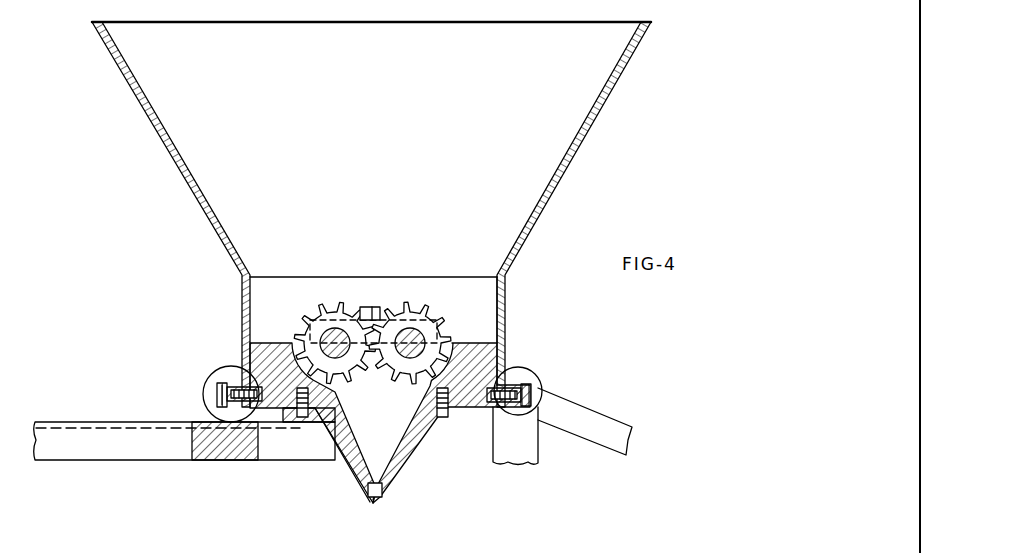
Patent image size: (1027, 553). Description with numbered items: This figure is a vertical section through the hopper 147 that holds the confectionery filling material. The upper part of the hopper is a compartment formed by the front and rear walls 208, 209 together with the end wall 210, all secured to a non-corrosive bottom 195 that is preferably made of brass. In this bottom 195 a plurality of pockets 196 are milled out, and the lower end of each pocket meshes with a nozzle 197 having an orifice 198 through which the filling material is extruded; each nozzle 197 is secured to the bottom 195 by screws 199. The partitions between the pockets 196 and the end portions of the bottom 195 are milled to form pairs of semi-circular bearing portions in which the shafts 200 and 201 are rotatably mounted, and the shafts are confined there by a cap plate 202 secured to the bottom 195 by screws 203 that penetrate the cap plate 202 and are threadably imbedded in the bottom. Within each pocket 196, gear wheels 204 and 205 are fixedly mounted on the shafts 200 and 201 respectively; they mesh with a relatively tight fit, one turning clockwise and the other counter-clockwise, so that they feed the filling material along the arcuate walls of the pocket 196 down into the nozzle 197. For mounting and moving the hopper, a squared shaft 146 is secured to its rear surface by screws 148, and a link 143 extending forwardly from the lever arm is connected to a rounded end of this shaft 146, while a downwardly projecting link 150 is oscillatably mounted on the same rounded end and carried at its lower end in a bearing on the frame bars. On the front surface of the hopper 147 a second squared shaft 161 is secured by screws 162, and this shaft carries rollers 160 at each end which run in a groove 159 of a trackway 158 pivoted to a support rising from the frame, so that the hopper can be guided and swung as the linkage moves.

The link 143 is at (622, 424).
The squared shaft 146 is at (516, 384).
The hopper 147 is at (508, 322).
The screws 148 is at (527, 395).
The downwardly projecting links 150 is at (538, 452).
The trackway 158 is at (86, 421).
The groove 159 is at (146, 427).
The rollers 160 is at (204, 396).
The squared shaft 161 is at (222, 383).
The screws 162 is at (215, 389).
The bottom 195 is at (478, 410).
The pockets 196 is at (295, 340).
The nozzle 197 is at (348, 465).
The orifice 198 is at (374, 500).
The screws 199 is at (302, 420).
The shaft 200 is at (338, 330).
The shaft 201 is at (418, 330).
The cap plate 202 is at (397, 320).
The screws 203 is at (380, 312).
The gear wheel 204 is at (325, 306).
The gear wheel 205 is at (448, 325).
The front wall 208 is at (198, 199).
The rear wall 209 is at (540, 218).
The end wall 210 is at (371, 40).